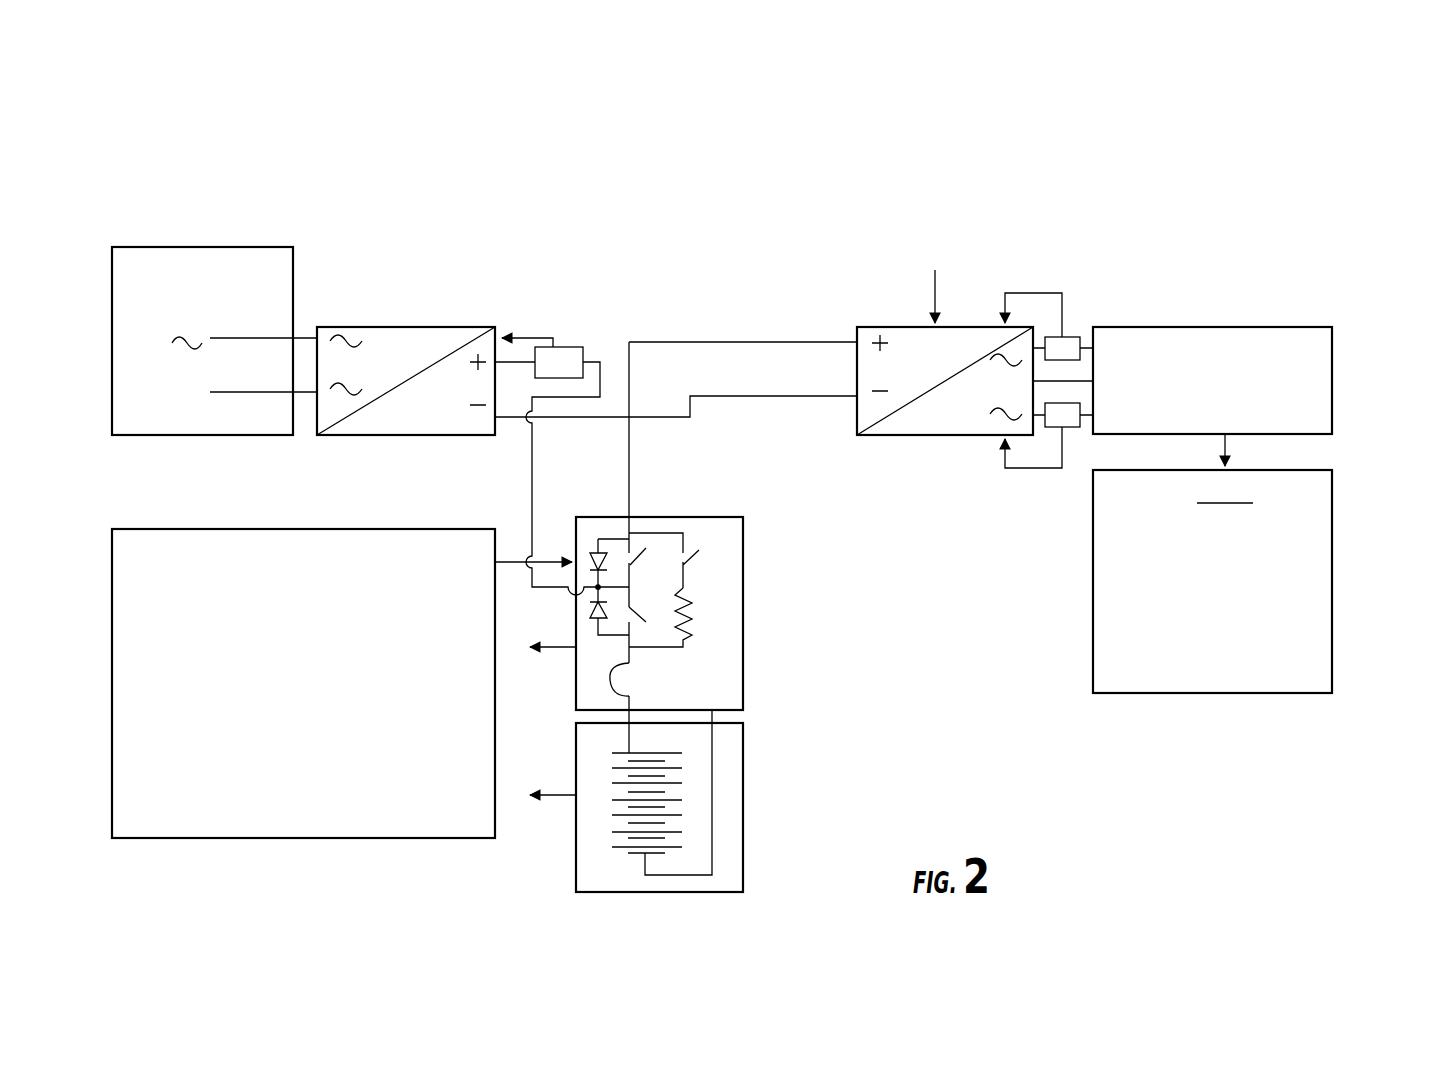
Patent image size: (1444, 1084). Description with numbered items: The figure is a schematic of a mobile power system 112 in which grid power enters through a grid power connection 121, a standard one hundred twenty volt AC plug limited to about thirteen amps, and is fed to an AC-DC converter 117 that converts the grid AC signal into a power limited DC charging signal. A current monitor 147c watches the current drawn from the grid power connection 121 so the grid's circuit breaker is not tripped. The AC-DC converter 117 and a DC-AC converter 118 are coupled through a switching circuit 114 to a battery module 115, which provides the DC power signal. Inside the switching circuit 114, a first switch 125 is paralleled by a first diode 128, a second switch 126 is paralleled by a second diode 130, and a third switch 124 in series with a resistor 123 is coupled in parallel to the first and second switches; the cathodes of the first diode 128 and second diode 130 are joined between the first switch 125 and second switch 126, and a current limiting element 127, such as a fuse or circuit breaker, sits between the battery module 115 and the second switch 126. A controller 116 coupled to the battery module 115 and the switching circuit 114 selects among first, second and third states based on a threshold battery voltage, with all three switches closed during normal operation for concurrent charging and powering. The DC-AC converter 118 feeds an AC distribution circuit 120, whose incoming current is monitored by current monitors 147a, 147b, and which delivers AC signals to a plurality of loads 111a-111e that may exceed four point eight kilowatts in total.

The mobile power system 112 is at (1021, 157).
The grid power connection 121 is at (228, 247).
The AC-DC converter 117 is at (440, 330).
The current monitor 147c is at (565, 350).
The controller 116 is at (464, 578).
The switching circuit 114 is at (750, 550).
The first diode 128 is at (592, 533).
The second diode 130 is at (585, 603).
The first switch 125 is at (636, 545).
The third switch 124 is at (700, 532).
The resistor 123 is at (692, 603).
The second switch 126 is at (634, 622).
The current limiting element 127 is at (630, 690).
The battery module 115 is at (728, 850).
The DC-AC converter 118 is at (970, 340).
The current monitor 147a is at (1070, 340).
The current monitor 147b is at (1072, 420).
The AC distribution circuit 120 is at (1332, 348).
The plurality of loads 111a-111e is at (1332, 508).